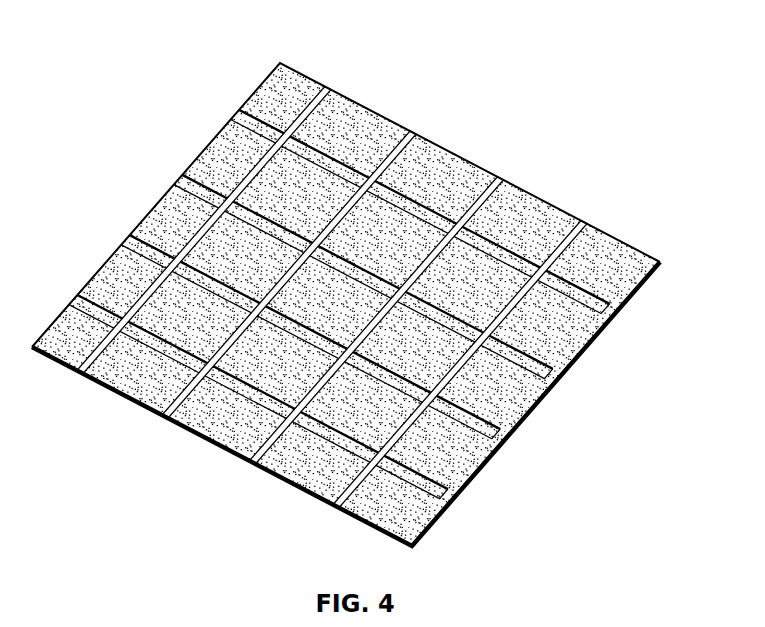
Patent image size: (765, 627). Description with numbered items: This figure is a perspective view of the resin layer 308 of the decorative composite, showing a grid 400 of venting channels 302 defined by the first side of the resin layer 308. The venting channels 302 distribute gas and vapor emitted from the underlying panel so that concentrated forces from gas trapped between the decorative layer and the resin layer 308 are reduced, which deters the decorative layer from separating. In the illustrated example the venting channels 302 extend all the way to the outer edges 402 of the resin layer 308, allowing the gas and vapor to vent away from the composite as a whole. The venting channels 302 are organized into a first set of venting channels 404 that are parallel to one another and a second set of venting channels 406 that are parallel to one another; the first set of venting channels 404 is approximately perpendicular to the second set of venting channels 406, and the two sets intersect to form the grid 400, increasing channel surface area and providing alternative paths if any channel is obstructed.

The grid 400 is at (349, 287).
The venting channels 302 is at (327, 97).
The resin layer 308 is at (138, 204).
The outer edges 402 is at (638, 247).
The first set of venting channels 404 is at (612, 318).
The second set of venting channels 406 is at (502, 180).